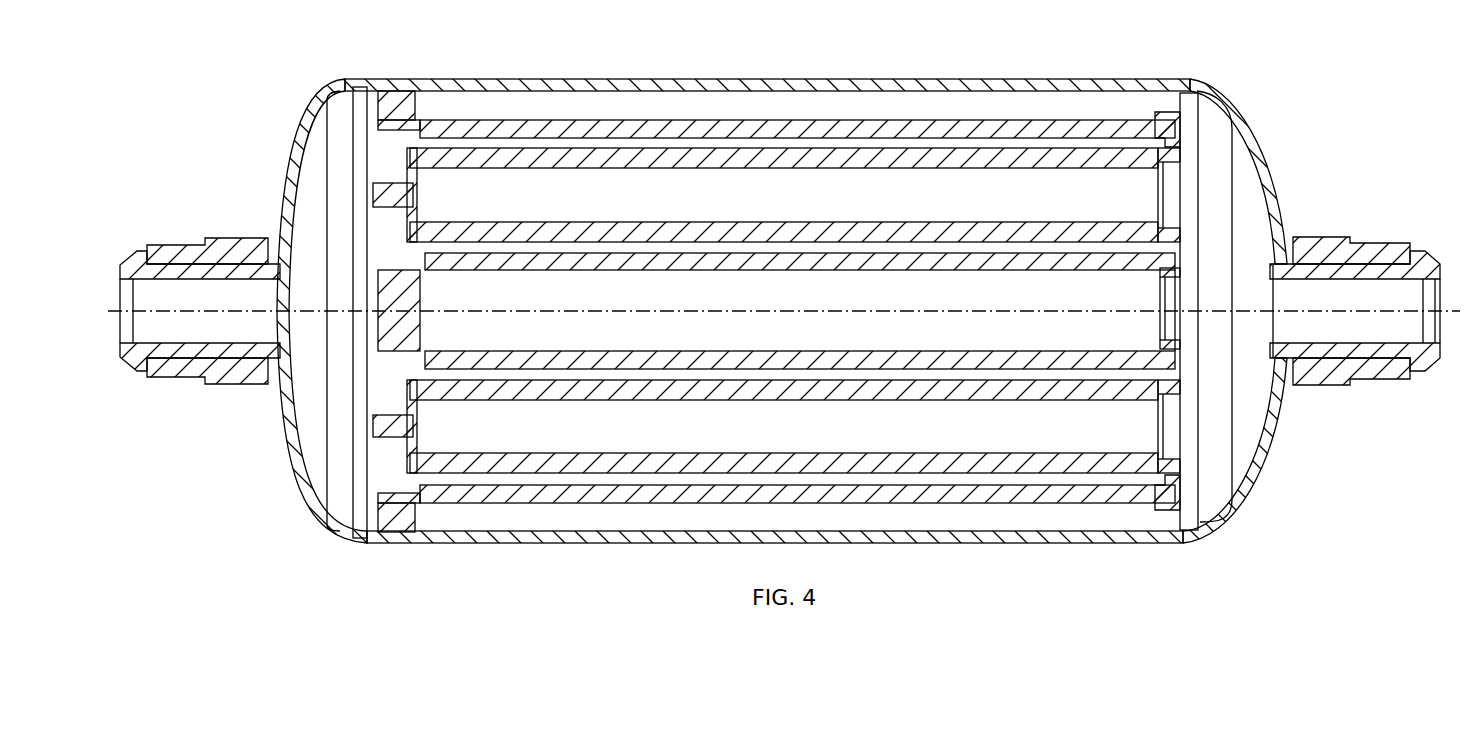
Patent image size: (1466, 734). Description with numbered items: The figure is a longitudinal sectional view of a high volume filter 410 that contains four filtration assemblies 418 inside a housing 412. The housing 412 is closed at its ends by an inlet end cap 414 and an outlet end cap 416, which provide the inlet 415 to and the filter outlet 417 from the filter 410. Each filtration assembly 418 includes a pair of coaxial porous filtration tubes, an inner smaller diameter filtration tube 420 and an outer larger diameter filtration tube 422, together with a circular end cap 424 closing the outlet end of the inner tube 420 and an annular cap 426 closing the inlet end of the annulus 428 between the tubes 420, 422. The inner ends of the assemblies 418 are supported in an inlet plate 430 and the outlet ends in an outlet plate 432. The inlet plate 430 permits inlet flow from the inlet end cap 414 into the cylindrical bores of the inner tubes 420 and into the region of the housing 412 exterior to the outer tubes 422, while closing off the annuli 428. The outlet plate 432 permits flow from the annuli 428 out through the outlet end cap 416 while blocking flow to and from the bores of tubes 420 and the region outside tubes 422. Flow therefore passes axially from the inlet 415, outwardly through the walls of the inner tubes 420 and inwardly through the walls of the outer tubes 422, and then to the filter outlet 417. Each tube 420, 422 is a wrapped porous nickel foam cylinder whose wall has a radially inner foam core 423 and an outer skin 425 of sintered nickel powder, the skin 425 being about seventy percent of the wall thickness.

The filter 410 is at (803, 68).
The housing 412 is at (555, 548).
The inlet end cap 414 is at (1262, 180).
The inlet 415 is at (1417, 243).
The outlet end cap 416 is at (307, 490).
The filter outlet 417 is at (140, 245).
The filtration assembly 418 is at (1007, 118).
The inner filtration tube 420 is at (867, 188).
The outer filtration tube 422 is at (672, 263).
The foam core 423 is at (581, 395).
The circular end cap 424 is at (417, 192).
The skin 425 is at (762, 386).
The annular cap 426 is at (1177, 112).
The annulus 428 is at (580, 133).
The inlet plate 430 is at (1183, 190).
The outlet plate 432 is at (368, 391).